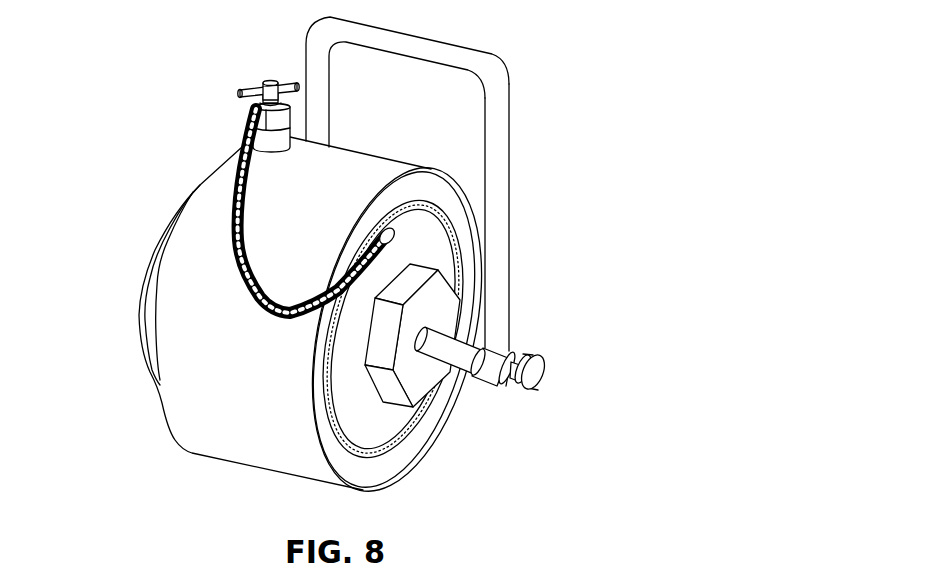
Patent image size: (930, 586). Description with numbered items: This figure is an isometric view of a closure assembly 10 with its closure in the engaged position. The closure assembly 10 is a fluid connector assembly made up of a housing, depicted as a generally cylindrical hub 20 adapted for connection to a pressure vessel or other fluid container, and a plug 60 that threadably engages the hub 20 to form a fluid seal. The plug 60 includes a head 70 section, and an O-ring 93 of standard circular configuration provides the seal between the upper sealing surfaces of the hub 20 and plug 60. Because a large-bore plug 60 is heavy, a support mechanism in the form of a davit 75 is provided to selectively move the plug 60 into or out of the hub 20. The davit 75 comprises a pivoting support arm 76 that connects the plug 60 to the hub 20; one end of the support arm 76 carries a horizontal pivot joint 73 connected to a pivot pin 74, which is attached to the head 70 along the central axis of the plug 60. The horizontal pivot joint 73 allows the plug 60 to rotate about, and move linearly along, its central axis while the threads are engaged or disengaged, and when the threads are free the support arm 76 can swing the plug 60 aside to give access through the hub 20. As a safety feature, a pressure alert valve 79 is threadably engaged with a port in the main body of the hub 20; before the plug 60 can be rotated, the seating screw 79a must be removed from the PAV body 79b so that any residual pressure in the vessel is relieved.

The closure assembly 10 is at (118, 76).
The hub 20 is at (146, 394).
The plug 60 is at (406, 423).
The head 70 is at (436, 305).
The horizontal pivot joint 73 is at (490, 374).
The pivot pin 74 is at (518, 354).
The davit 75 is at (518, 40).
The support arm 76 is at (417, 46).
The pressure alert valve 79 is at (263, 70).
The seating screw 79a is at (255, 86).
The PAV body 79b is at (250, 128).
The O-ring 93 is at (380, 462).